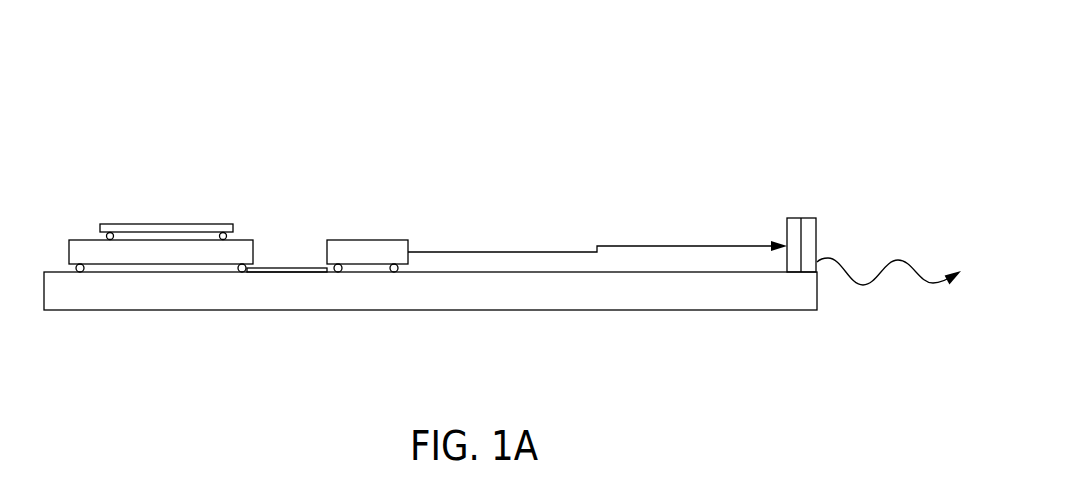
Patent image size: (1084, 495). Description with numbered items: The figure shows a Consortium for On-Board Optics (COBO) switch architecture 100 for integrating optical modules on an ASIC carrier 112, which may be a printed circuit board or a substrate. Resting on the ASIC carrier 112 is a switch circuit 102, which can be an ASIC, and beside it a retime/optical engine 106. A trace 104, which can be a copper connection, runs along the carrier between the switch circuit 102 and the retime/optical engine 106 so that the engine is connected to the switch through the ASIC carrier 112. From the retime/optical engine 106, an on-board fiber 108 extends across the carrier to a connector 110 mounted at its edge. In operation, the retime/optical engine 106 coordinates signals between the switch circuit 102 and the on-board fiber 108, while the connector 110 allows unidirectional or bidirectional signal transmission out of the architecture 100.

The COBO switch architecture 100 is at (455, 40).
The switch circuit 102 is at (168, 223).
The trace 104 is at (290, 268).
The retime/optical engine 106 is at (368, 240).
The on-board fiber 108 is at (642, 246).
The connector 110 is at (802, 218).
The ASIC carrier 112 is at (500, 290).